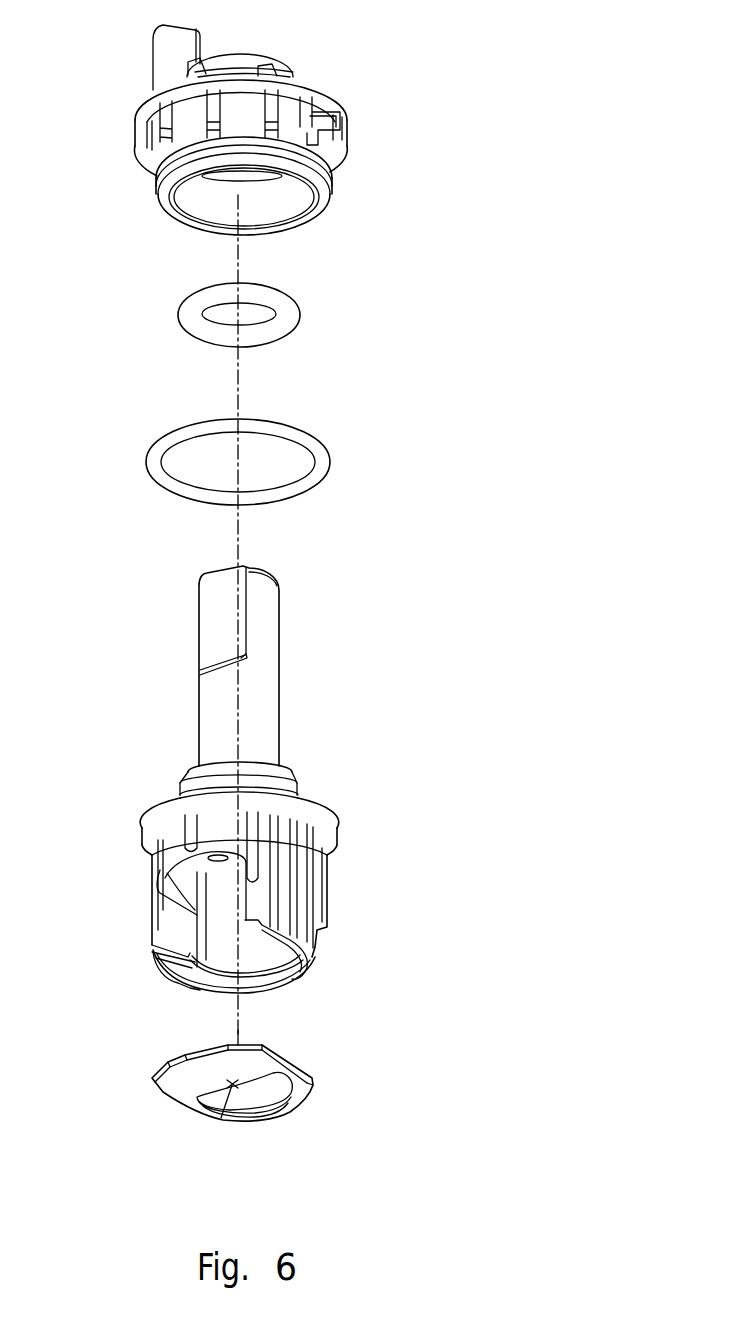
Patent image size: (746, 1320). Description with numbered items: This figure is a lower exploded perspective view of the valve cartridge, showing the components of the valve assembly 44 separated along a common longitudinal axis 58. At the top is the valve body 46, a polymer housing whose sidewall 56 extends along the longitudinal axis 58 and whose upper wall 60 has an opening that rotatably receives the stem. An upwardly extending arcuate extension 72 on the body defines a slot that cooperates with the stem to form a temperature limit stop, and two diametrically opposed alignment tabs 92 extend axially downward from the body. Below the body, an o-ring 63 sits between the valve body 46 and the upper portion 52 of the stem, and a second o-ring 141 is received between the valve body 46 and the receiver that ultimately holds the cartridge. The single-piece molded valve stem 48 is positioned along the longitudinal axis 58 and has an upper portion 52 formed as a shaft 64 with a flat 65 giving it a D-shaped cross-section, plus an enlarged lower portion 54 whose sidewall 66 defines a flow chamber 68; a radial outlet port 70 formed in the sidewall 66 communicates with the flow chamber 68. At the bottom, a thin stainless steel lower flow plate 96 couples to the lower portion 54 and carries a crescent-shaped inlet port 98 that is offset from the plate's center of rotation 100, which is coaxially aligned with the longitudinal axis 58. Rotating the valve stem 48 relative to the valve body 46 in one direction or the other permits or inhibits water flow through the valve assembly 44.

The valve assembly 44 is at (563, 128).
The valve body 46 is at (337, 112).
The valve stem 48 is at (288, 590).
The upper portion 52 is at (273, 650).
The enlarged lower portion 54 is at (307, 897).
The sidewall 56 is at (148, 150).
The longitudinal axis 58 is at (238, 388).
The upper wall 60 is at (293, 767).
The o-ring 63 is at (190, 312).
The shaft 64 is at (272, 620).
The flat 65 is at (213, 618).
The sidewall 66 is at (173, 980).
The flow chamber 68 is at (258, 952).
The outlet port 70 is at (172, 933).
The arcuate extension 72 is at (150, 57).
The alignment tabs 92 is at (327, 125).
The lower flow plate 96 is at (172, 1098).
The inlet port 98 is at (277, 1118).
The center of rotation 100 is at (221, 1118).
The o-ring 141 is at (322, 453).